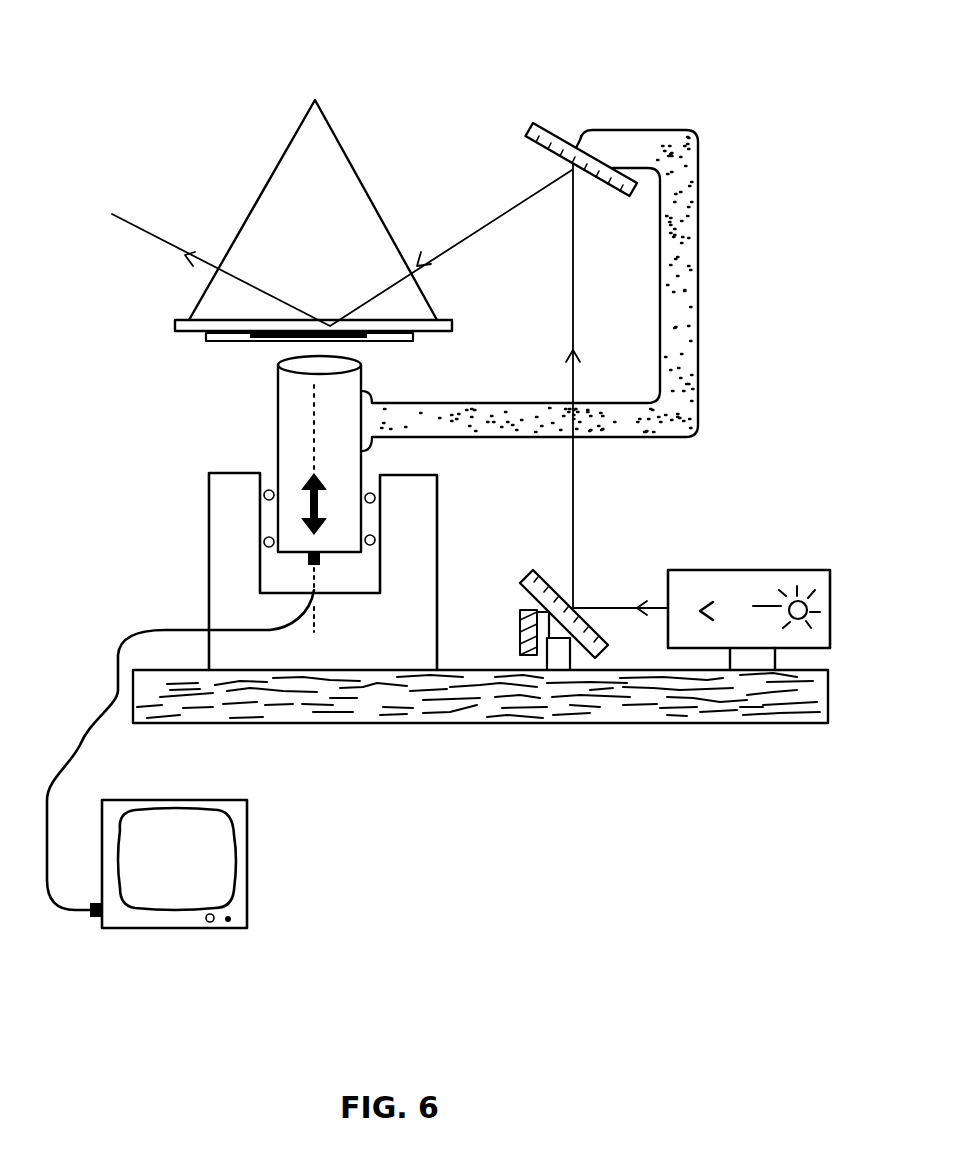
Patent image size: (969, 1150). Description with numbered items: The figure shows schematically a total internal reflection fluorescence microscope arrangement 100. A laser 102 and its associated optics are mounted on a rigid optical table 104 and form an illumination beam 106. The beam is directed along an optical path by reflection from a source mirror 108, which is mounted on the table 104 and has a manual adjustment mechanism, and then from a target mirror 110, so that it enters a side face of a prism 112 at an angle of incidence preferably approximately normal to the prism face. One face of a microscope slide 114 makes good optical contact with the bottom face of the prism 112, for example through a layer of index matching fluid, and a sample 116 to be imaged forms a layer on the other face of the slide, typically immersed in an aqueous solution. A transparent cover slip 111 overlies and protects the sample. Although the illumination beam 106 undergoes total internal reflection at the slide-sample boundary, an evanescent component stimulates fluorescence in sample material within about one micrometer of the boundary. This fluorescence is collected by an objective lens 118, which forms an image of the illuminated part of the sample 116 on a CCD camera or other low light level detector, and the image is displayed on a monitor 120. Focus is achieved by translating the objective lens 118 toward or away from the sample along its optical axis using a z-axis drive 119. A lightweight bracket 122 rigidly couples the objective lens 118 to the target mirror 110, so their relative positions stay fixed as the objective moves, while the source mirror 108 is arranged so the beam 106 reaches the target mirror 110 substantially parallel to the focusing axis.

The arrangement 100 is at (137, 67).
The laser 102 is at (810, 567).
The optical table 104 is at (788, 708).
The illumination beam 106 is at (575, 515).
The source mirror 108 is at (597, 658).
The target mirror 110 is at (545, 127).
The cover slip 111 is at (225, 343).
The prism 112 is at (330, 152).
The microscope slide 114 is at (178, 330).
The sample 116 is at (368, 343).
The objective lens 118 is at (298, 430).
The z-axis drive 119 is at (223, 562).
The monitor 120 is at (243, 872).
The bracket 122 is at (685, 263).